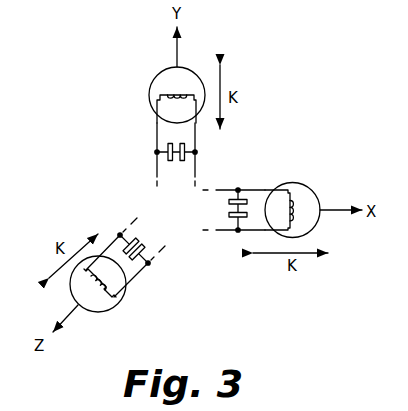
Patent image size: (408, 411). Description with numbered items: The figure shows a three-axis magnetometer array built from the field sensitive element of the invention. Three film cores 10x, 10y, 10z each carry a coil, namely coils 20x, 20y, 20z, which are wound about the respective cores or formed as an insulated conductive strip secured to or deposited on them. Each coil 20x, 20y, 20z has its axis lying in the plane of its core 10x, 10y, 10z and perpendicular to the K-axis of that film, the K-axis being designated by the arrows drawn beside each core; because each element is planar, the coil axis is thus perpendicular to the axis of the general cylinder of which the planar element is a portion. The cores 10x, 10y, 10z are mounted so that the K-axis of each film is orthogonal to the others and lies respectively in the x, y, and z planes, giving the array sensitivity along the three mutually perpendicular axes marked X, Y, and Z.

The core 10y is at (151, 107).
The coil 20y is at (167, 93).
The core 10x is at (296, 183).
The coil 20x is at (298, 203).
The core 10z is at (125, 295).
The coil 20z is at (103, 293).